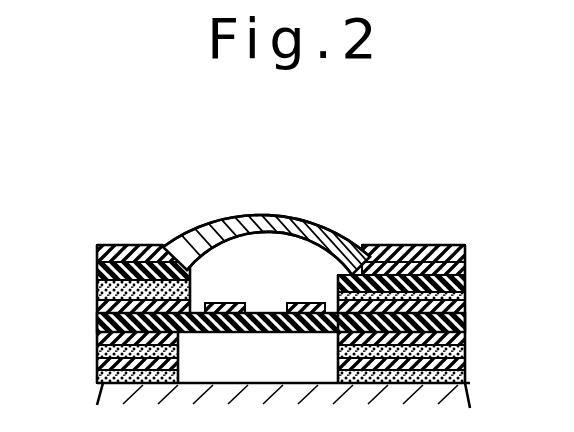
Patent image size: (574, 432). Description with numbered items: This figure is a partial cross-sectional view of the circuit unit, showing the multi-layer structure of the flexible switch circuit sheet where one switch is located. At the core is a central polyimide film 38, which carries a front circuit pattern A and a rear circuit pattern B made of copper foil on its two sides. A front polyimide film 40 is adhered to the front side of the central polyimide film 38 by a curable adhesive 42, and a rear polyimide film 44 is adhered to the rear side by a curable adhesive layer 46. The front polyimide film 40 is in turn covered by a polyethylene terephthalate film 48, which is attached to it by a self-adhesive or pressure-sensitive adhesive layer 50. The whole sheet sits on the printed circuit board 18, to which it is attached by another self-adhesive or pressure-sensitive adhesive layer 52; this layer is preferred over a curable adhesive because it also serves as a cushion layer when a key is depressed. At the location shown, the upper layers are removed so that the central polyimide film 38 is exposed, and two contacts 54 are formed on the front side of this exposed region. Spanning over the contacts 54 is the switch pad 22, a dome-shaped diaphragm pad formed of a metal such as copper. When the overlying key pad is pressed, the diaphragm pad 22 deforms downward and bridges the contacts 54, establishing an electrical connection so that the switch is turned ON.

The printed circuit board 18 is at (463, 388).
The switch pad 22 is at (293, 215).
The central polyimide film 38 is at (97, 323).
The front polyimide film 40 is at (465, 280).
The curable adhesive 42 is at (97, 302).
The rear polyimide film 44 is at (463, 370).
The curable adhesive layer 46 is at (97, 352).
The polyethylene terephthalate film 48 is at (447, 250).
The self-adhesive or pressure-sensitive adhesive layer 50 is at (96, 262).
The self-adhesive or pressure-sensitive adhesive layer 52 is at (97, 378).
The contacts 54 is at (226, 302).
The front circuit pattern A is at (467, 313).
The rear circuit pattern B is at (467, 343).